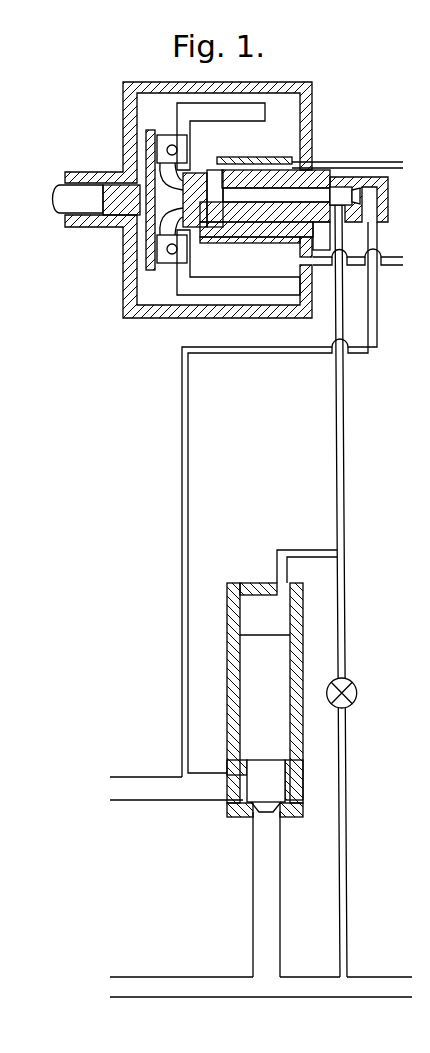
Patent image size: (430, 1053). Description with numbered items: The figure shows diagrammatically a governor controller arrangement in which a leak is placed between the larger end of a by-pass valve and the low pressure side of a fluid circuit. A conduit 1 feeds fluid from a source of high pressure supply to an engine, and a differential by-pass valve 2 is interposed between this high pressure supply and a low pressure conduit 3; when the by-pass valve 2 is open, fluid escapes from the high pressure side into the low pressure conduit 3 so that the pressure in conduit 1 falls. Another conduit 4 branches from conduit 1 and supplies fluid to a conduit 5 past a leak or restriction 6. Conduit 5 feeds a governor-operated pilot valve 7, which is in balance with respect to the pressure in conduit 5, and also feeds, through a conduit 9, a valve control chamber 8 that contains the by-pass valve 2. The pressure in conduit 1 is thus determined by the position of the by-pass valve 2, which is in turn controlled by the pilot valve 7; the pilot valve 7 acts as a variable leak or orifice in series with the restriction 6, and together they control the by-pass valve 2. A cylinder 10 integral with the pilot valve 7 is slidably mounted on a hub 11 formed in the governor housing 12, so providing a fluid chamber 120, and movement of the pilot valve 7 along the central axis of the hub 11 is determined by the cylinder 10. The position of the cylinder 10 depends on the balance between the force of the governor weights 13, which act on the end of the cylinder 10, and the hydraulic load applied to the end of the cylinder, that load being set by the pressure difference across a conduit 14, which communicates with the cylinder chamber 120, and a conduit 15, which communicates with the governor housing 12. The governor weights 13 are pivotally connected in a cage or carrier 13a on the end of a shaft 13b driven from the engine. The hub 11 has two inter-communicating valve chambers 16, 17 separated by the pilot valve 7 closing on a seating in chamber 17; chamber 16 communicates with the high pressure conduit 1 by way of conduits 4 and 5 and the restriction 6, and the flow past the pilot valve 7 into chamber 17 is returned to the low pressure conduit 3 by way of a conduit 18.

The conduit 1 is at (265, 990).
The differential by-pass valve 2 is at (258, 785).
The low pressure conduit 3 is at (135, 790).
The conduit 4 is at (348, 850).
The conduit 5 is at (346, 581).
The leak or restriction 6 is at (357, 693).
The governor-operated pilot valve 7 is at (265, 197).
The valve control chamber 8 is at (253, 607).
The conduit 9 is at (304, 553).
The cylinder 10 is at (285, 162).
The hub 11 is at (283, 232).
The governor housing 12 is at (305, 87).
The governor weights 13 is at (185, 112).
The cage or carrier 13a is at (150, 250).
The shaft 13b is at (57, 208).
The conduit 14 is at (390, 166).
The conduit 15 is at (390, 265).
The valve chamber 16 is at (355, 197).
The valve chamber 17 is at (369, 210).
The conduit 18 is at (372, 352).
The fluid chamber 120 is at (216, 178).